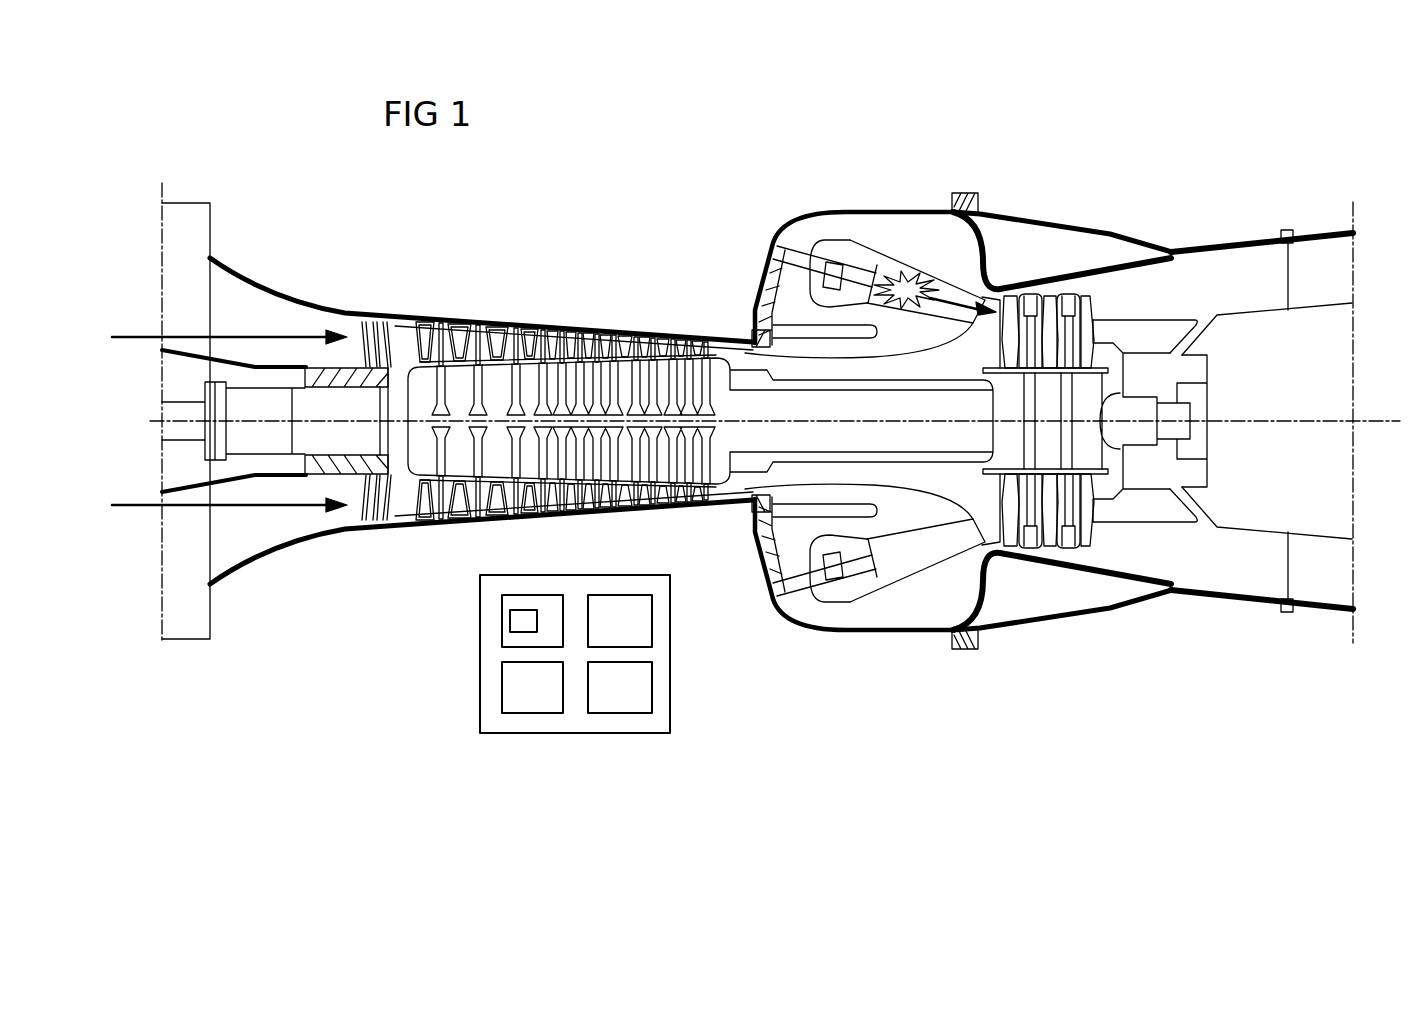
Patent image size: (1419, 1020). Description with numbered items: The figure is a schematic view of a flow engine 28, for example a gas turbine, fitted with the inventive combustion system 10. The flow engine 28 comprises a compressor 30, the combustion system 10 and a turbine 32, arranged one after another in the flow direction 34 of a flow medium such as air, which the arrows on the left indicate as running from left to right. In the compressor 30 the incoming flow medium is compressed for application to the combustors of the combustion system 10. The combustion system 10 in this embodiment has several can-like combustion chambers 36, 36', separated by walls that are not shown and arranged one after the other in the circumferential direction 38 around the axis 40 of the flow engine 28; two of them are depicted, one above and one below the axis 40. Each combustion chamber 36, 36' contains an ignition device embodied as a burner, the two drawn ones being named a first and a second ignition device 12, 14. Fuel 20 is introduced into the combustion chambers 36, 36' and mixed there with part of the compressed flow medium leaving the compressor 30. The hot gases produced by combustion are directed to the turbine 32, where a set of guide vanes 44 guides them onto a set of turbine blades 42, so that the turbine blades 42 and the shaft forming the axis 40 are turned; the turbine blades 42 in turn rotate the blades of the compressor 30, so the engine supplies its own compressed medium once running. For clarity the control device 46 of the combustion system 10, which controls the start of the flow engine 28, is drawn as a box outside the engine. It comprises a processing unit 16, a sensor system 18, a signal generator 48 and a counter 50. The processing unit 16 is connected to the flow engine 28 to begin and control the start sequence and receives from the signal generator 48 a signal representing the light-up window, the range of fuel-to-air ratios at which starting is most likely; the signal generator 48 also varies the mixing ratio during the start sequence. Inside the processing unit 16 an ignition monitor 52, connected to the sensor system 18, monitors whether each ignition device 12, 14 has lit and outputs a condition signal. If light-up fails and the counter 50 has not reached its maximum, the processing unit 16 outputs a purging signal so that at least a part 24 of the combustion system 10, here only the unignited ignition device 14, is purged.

The combustion system 10 is at (718, 230).
The first ignition device 12 is at (837, 243).
The second ignition device 14 is at (837, 597).
The processing unit 16 is at (510, 625).
The sensor system 18 is at (652, 603).
The fuel 20 is at (985, 248).
The part of the combustion system 24 is at (960, 537).
The flow engine 28 is at (1172, 196).
The compressor 30 is at (501, 318).
The turbine 32 is at (1065, 252).
The flow direction 34 is at (143, 334).
The combustion chamber 36 is at (935, 231).
The combustion chamber 36' is at (917, 608).
The circumferential direction 38 is at (1381, 474).
The axis 40 is at (1312, 425).
The turbine blades 42 is at (1030, 300).
The guide vanes 44 is at (1083, 310).
The control device 46 is at (577, 733).
The signal generator 48 is at (502, 705).
The counter 50 is at (652, 705).
The ignition monitor 52 is at (502, 603).